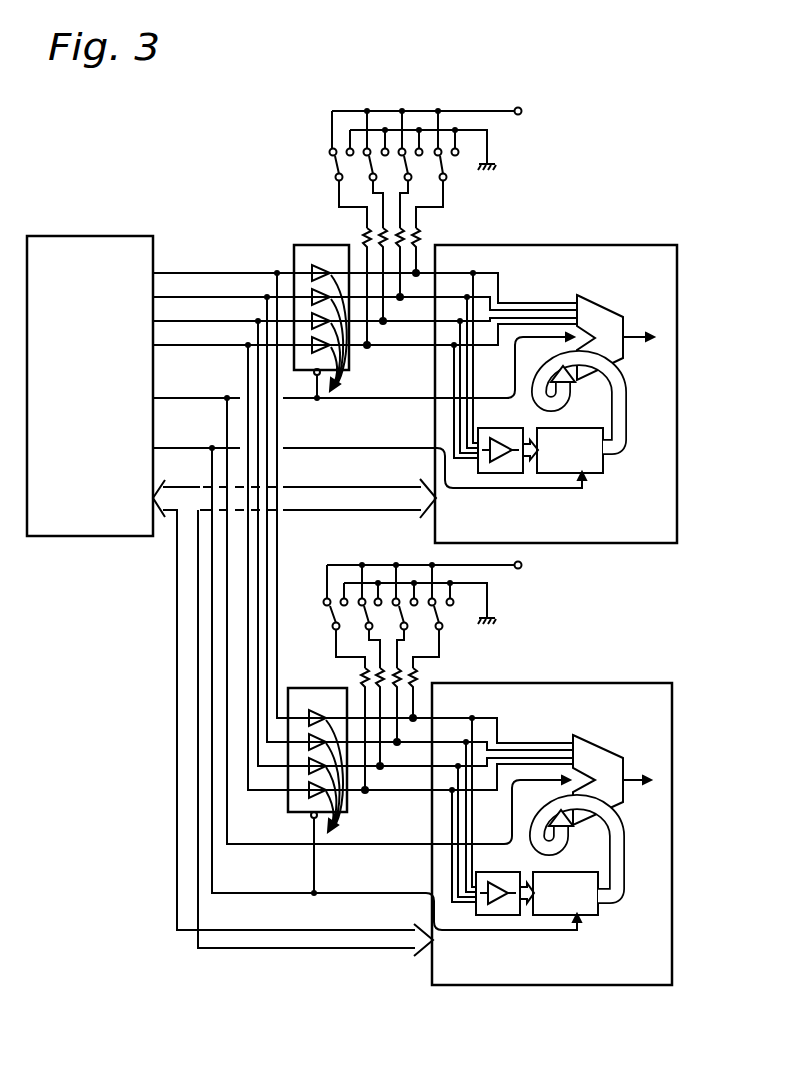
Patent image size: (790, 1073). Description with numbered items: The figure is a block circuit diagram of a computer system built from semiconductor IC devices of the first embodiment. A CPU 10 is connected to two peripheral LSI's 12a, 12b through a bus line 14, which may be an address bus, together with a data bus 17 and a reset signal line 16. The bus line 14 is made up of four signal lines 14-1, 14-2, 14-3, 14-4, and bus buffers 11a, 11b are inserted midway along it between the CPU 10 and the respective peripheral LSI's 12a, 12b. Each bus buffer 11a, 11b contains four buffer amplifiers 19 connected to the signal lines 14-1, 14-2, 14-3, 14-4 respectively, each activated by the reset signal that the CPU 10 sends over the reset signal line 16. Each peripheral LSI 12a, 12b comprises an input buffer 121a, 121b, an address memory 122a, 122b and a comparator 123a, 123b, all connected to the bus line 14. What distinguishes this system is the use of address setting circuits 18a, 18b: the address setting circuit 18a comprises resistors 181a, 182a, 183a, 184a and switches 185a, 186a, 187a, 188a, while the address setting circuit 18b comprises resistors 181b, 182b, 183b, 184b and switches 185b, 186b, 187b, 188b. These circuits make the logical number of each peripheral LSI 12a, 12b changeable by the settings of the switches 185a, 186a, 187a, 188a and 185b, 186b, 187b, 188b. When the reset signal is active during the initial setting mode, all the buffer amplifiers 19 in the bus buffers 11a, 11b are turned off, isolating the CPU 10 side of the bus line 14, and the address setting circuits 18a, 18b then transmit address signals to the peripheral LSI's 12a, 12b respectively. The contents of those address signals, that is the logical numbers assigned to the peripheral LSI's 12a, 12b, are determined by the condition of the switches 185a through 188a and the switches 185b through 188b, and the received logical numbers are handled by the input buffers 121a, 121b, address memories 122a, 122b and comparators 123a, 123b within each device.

The CPU 10 is at (73, 537).
The bus buffer 11a is at (295, 254).
The bus buffer 11b is at (287, 805).
The peripheral LSI 12a is at (556, 371).
The peripheral LSI 12b is at (552, 817).
The bus line 14 is at (310, 487).
The signal line 14-1 is at (166, 273).
The signal line 14-2 is at (180, 297).
The signal line 14-3 is at (189, 321).
The signal line 14-4 is at (210, 345).
The reset signal line 16 is at (171, 449).
The data bus 17 is at (303, 494).
The address setting circuit 18a is at (431, 196).
The address setting circuit 18b is at (434, 655).
The buffer amplifier 19 is at (363, 585).
The input buffer 121a is at (500, 474).
The input buffer 121b is at (493, 920).
The address memory 122a is at (592, 474).
The address memory 122b is at (600, 912).
The comparator 123a is at (603, 297).
The comparator 123b is at (601, 739).
The resistor 181a is at (365, 227).
The resistor 182a is at (385, 227).
The resistor 183a is at (402, 227).
The resistor 184a is at (417, 228).
The switch 185a is at (336, 148).
The switch 186a is at (378, 142).
The switch 187a is at (403, 140).
The switch 188a is at (446, 142).
The resistor 181b is at (364, 674).
The resistor 182b is at (384, 668).
The resistor 183b is at (398, 668).
The resistor 184b is at (422, 681).
The switch 185b is at (329, 611).
The switch 186b is at (372, 581).
The switch 187b is at (407, 582).
The switch 188b is at (457, 608).